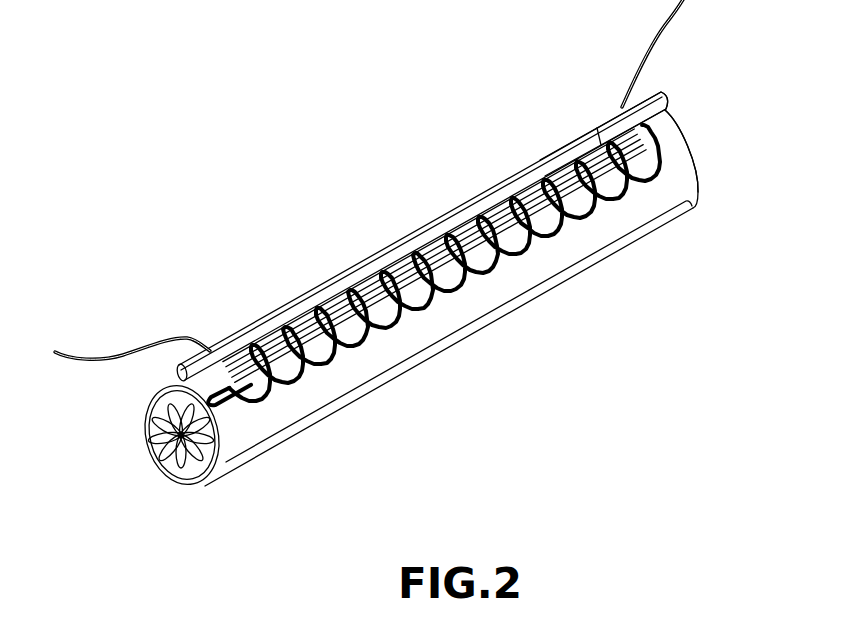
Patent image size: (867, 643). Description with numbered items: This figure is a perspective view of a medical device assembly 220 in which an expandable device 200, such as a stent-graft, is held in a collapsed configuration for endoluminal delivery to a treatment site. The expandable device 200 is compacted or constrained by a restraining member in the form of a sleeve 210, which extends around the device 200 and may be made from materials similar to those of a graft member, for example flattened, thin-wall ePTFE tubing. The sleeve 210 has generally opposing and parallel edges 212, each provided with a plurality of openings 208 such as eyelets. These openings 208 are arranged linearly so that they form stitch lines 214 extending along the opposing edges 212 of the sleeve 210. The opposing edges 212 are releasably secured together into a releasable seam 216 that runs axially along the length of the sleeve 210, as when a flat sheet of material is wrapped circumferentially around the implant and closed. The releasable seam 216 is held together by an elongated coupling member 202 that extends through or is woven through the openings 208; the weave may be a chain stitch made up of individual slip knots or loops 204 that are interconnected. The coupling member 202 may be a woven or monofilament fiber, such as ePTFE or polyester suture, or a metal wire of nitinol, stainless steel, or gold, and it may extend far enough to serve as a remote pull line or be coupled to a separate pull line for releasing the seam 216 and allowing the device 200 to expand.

The expandable device 200 is at (151, 440).
The elongated coupling member 202 is at (667, 46).
The slip knots or loops 204 is at (440, 298).
The openings 208 is at (293, 327).
The sleeve 210 is at (309, 448).
The opposing edges 212 is at (545, 161).
The stitch lines 214 is at (688, 112).
The releasable seam 216 is at (400, 267).
The medical device assembly 220 is at (310, 122).